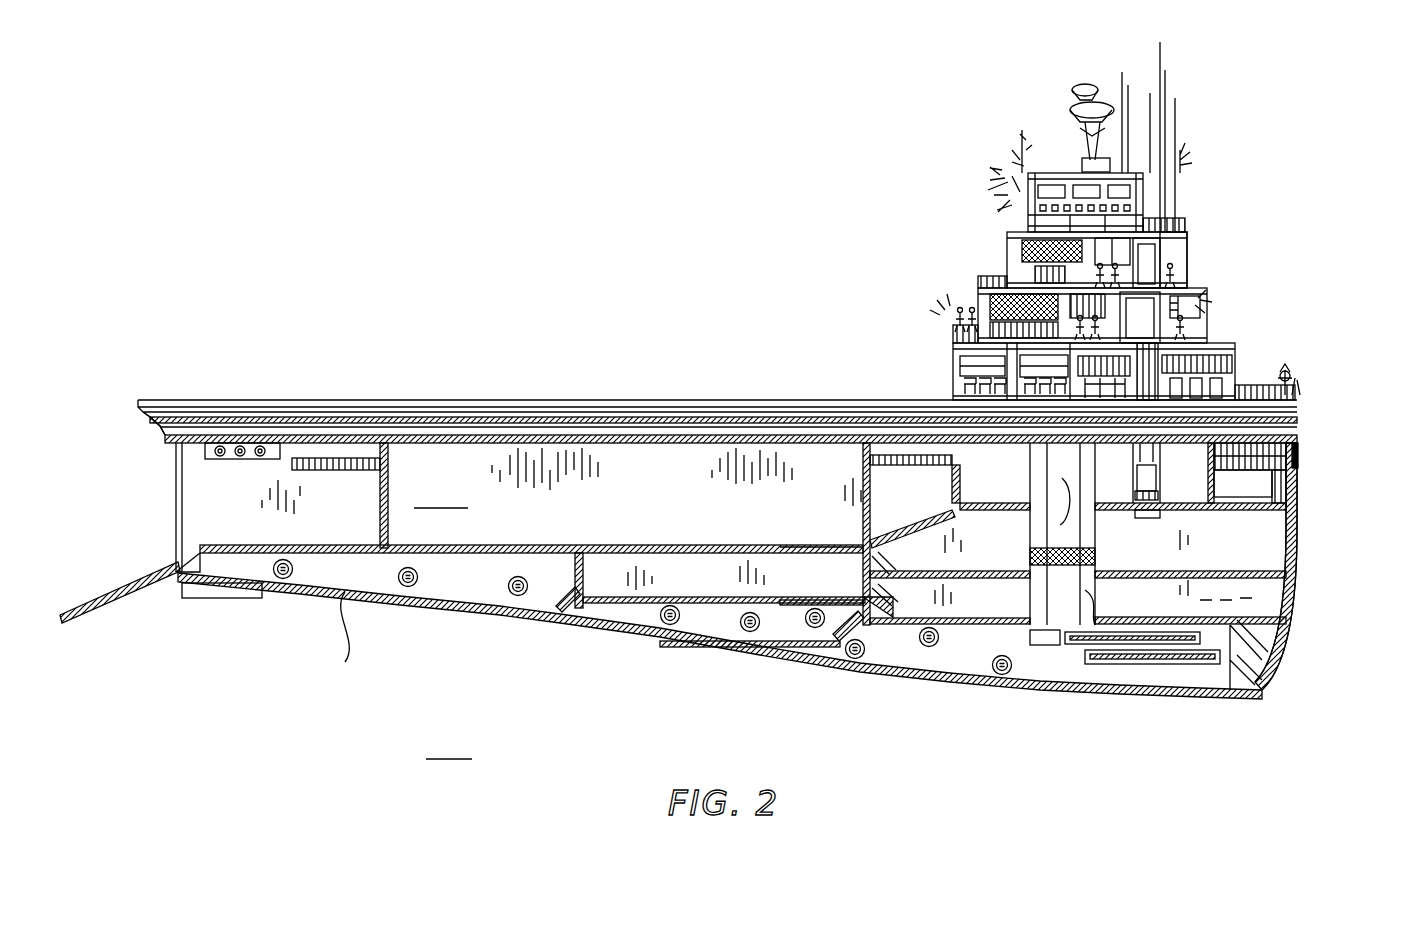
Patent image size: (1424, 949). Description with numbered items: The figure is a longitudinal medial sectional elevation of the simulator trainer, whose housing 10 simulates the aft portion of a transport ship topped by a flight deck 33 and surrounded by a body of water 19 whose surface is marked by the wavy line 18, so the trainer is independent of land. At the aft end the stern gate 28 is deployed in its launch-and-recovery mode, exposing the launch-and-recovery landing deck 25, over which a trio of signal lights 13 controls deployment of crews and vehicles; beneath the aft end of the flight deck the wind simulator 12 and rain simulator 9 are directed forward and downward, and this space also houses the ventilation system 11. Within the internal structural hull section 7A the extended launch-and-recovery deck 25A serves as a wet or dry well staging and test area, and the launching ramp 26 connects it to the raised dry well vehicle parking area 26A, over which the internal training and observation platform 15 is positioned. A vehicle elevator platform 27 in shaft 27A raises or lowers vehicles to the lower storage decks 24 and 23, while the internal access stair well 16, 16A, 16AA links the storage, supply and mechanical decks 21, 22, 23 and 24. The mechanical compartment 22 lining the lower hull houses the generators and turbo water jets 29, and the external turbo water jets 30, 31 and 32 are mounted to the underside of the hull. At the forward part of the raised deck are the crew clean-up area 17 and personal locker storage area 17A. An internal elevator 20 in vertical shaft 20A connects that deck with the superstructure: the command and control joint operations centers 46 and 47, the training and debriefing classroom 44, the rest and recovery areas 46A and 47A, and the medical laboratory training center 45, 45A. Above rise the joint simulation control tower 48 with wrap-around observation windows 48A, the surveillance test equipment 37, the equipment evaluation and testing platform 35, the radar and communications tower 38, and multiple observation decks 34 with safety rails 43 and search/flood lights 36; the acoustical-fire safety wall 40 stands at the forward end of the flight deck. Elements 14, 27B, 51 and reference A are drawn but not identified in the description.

The housing 10 is at (436, 398).
The flight deck 33 is at (642, 400).
The internal/external ventilation system 11 is at (325, 430).
The signal lights 13 is at (217, 420).
The rain simulator 9 is at (148, 415).
The wind simulator 12 is at (154, 425).
The bulkhead 14 is at (367, 445).
The launch-and-recovery landing deck 25 is at (240, 535).
The internal structural hull section 7A is at (506, 478).
The extended launch-and-recovery deck 25A is at (662, 500).
The internal access stair well 16 is at (835, 562).
The internal training and observation platform 15 is at (860, 470).
The internal vehicle storage, supply and mechanical deck 21 is at (680, 590).
The body of water 19 is at (720, 666).
The stern gate 28 is at (120, 600).
The external turbo water jet 30 is at (220, 600).
The turbo water jets 29 is at (325, 602).
The mechanical compartment 22 is at (510, 586).
The internal access stair well 16A is at (547, 614).
The external turbo water jet 31 is at (570, 624).
The launching ramp 26 is at (920, 525).
The raised dry well vehicle parking/storage area 26A is at (1009, 466).
The lower storage deck 24 is at (995, 540).
The elevator shaft 27A is at (1080, 540).
The lower storage deck 23 is at (920, 603).
The vehicle elevator platform 27 is at (1085, 598).
The elevator base 27B is at (1045, 646).
The external turbo water jet 32 is at (1152, 665).
The internal access stair well 16AA is at (1270, 662).
The wavy surface line 18 is at (1300, 600).
The personal locker storage area 17A is at (1290, 466).
The crew clean-up area 17 is at (1250, 490).
The stern fitting 51 is at (1300, 450).
The internal elevator 20 is at (1150, 492).
The acoustical-fire safety wall 40 is at (960, 392).
The medical laboratory training center 45 is at (960, 372).
The medical laboratory training center 45A is at (1250, 375).
The training and debriefing area 44 is at (960, 348).
The Command, Control, Joint Operations Center 46 is at (978, 295).
The debriefing/rest and recovery area 46A is at (950, 312).
The Command, Control, Joint Operations Center 47 is at (1010, 250).
The debriefing/rest and recovery area 47A is at (1005, 264).
The vertical elevator shaft 20A is at (1200, 248).
The equipment evaluation and testing platform 35 is at (1175, 215).
The safety rails 43 is at (1190, 226).
The tactical and reconnaissance surveillance test equipment 37 is at (1135, 140).
The radar tracking and joint communications tower 38 is at (1062, 90).
The combination search/flood lights 36 is at (1020, 140).
The multiple observation decks 34 is at (1292, 375).
The wrap-around observation windows 48A is at (1000, 176).
The Joint Simulation Control Tower 48 is at (1020, 205).
The aircraft carrier A is at (530, 355).